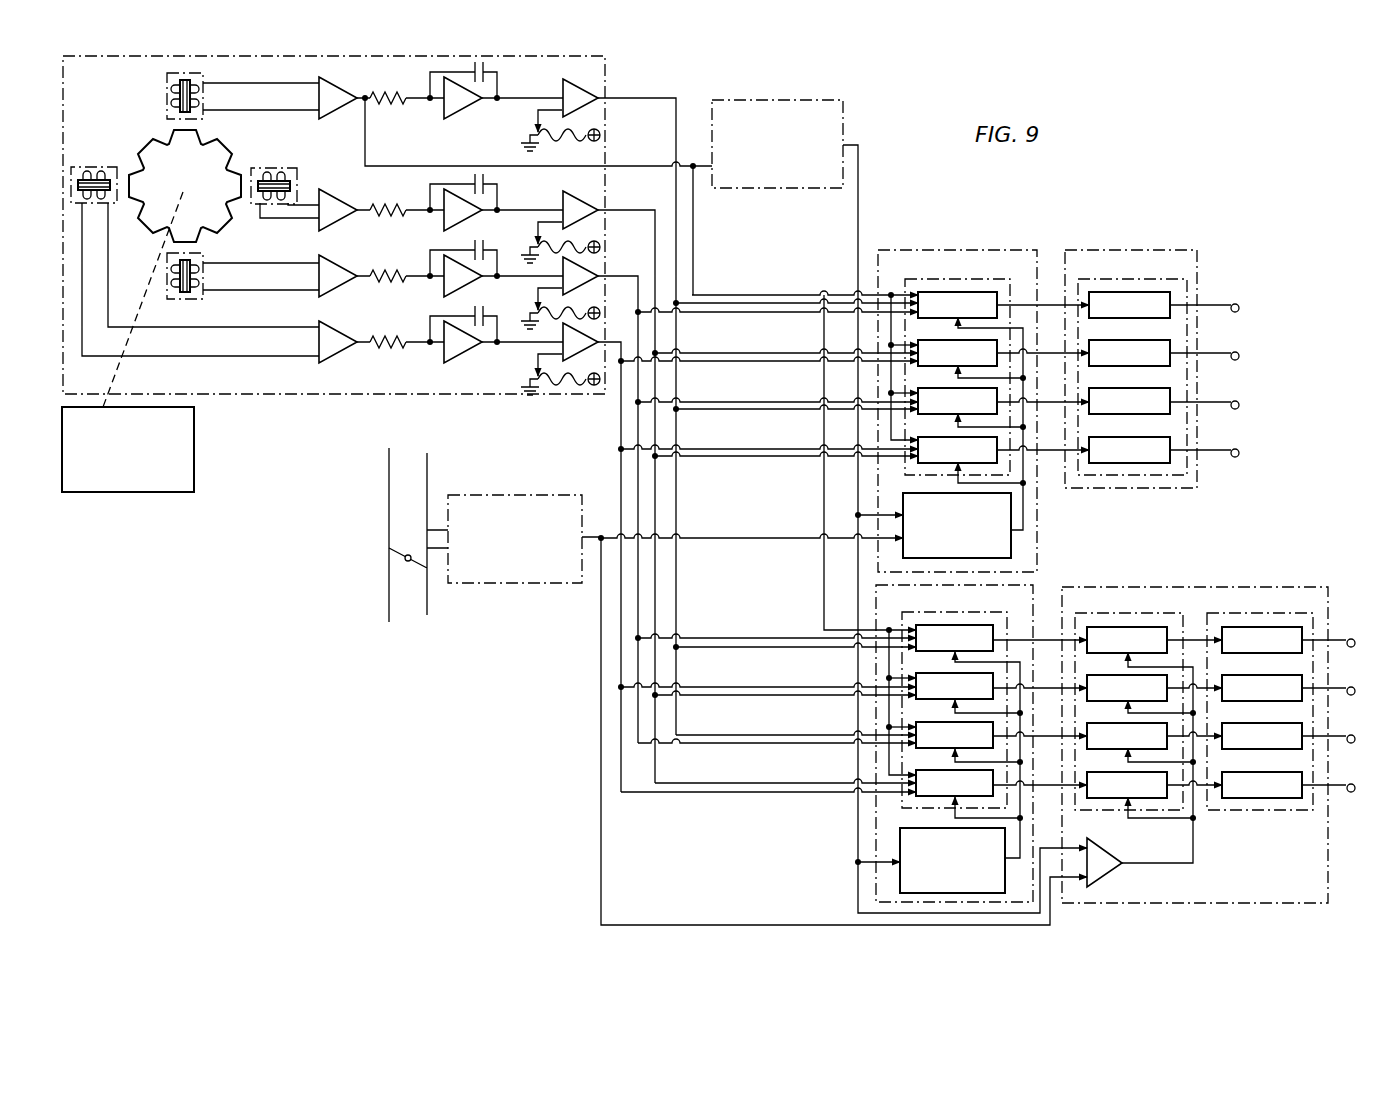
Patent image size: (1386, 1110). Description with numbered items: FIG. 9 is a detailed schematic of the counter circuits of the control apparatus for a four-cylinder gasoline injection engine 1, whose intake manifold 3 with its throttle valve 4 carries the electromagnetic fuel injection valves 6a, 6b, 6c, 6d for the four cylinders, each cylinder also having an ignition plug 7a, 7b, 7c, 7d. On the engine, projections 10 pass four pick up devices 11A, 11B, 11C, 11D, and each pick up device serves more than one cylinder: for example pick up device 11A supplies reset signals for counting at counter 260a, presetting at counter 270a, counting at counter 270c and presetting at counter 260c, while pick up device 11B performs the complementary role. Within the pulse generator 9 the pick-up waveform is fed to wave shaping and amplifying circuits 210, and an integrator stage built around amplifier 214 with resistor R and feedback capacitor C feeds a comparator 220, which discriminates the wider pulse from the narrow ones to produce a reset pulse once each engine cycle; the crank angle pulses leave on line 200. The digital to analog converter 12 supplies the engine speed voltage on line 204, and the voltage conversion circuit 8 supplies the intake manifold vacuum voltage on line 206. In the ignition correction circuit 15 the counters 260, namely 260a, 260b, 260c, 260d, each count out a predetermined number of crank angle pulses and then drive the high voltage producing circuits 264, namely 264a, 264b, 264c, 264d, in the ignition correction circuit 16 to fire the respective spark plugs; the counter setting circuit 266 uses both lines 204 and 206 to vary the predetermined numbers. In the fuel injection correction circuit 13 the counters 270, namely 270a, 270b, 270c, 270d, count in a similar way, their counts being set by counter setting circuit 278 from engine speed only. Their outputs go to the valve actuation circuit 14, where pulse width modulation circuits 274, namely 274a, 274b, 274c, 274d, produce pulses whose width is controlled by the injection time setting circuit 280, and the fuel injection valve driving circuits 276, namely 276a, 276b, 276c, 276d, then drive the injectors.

The four-cylinder gasoline injection engine 1 is at (194, 430).
The intake manifold 3 is at (388, 511).
The throttle valve 4 is at (406, 562).
The electromagnetic fuel injection valve 6a is at (1331, 631).
The electromagnetic fuel injection valve 6b is at (1331, 679).
The electromagnetic fuel injection valve 6c is at (1330, 727).
The electromagnetic fuel injection valve 6d is at (1332, 776).
The ignition plug 7a is at (1205, 297).
The ignition plug 7b is at (1205, 345).
The ignition plug 7c is at (1204, 394).
The ignition plug 7d is at (1206, 442).
The voltage conversion circuit 8 is at (586, 532).
The pulse generator 9 is at (608, 96).
The projections 10 is at (174, 218).
The pick up device 11A is at (167, 96).
The pick up device 11B is at (188, 296).
The pick up device 11C is at (294, 168).
The pick up device 11D is at (116, 150).
The digital to analog converter 12 is at (843, 145).
The fuel injection correction circuit 13 is at (1036, 606).
The valve actuation circuit 14 is at (1322, 600).
The ignition correction circuit 15 is at (1040, 266).
The ignition correction circuit 16 is at (1200, 266).
The crank angle pulse line 200 is at (701, 223).
The engine speed voltage line 204 is at (856, 223).
The intake manifold vacuum voltage line 206 is at (590, 542).
The wave shaping and amplifying circuit 210 is at (352, 98).
The integrating amplifier 214 is at (468, 116).
The comparator 220 is at (563, 98).
The resistor R is at (404, 94).
The capacitor C is at (474, 202).
The counter 260 is at (1010, 270).
The counter 260a is at (957, 305).
The counter 260b is at (957, 353).
The counter 260c is at (957, 401).
The counter 260d is at (957, 450).
The high voltage producing circuit 264 is at (1182, 278).
The high voltage producing circuit 264a is at (1129, 305).
The high voltage producing circuit 264b is at (1129, 353).
The high voltage producing circuit 264c is at (1129, 401).
The high voltage producing circuit 264d is at (1129, 450).
The counter setting circuit 266 is at (1011, 536).
The counter 270 is at (1010, 624).
The counter 270a is at (954, 638).
The counter 270b is at (954, 686).
The counter 270c is at (954, 735).
The counter 270d is at (954, 783).
The pulse width modulation circuit 274 is at (1129, 699).
The pulse width modulation circuit 274a is at (1127, 640).
The pulse width modulation circuit 274b is at (1127, 688).
The pulse width modulation circuit 274c is at (1127, 736).
The pulse width modulation circuit 274d is at (1127, 785).
The fuel injection valve driving circuit 276 is at (1260, 699).
The fuel injection valve driving circuit 276a is at (1262, 640).
The fuel injection valve driving circuit 276b is at (1262, 688).
The fuel injection valve driving circuit 276c is at (1262, 736).
The fuel injection valve driving circuit 276d is at (1262, 785).
The counter setting circuit 278 is at (1031, 890).
The injection time setting circuit 280 is at (1104, 870).